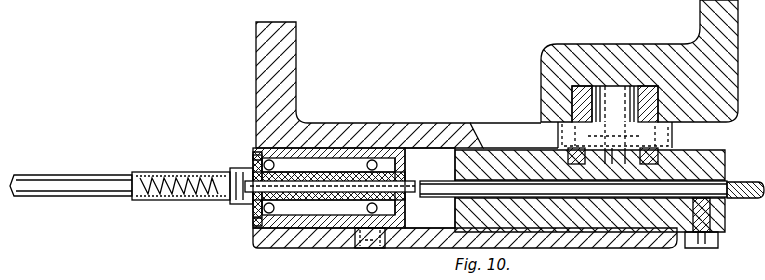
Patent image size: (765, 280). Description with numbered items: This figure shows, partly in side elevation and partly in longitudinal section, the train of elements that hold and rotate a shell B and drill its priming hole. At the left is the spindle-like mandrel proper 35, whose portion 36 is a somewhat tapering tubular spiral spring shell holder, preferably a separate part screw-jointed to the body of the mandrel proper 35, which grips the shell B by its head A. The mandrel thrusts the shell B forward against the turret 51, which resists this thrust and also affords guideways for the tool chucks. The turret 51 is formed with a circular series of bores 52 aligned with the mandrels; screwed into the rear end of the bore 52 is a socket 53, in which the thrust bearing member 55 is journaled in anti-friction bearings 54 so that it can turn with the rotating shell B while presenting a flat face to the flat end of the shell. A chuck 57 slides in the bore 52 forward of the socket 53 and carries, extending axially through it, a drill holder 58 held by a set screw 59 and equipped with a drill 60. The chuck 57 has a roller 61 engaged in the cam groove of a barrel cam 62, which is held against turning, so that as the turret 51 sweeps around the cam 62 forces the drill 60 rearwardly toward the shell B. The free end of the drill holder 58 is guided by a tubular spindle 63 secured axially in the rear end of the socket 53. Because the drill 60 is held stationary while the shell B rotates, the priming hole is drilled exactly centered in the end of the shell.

The mandrel proper 35 is at (82, 196).
The spiral spring shell holder 36 is at (190, 197).
The head A is at (238, 200).
The shell B is at (210, 198).
The turret 51 is at (428, 129).
The bore 52 is at (440, 231).
The socket 53 is at (327, 147).
The anti-friction bearings 54 is at (260, 224).
The thrust bearing member 55 is at (320, 208).
The chuck 57 is at (557, 229).
The drill holder 58 is at (640, 197).
The set screw 59 is at (703, 235).
The drill 60 is at (258, 168).
The roller 61 is at (658, 108).
The barrel cam 62 is at (546, 90).
The tubular spindle 63 is at (408, 179).